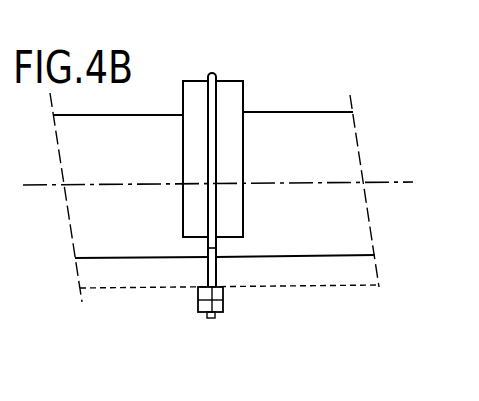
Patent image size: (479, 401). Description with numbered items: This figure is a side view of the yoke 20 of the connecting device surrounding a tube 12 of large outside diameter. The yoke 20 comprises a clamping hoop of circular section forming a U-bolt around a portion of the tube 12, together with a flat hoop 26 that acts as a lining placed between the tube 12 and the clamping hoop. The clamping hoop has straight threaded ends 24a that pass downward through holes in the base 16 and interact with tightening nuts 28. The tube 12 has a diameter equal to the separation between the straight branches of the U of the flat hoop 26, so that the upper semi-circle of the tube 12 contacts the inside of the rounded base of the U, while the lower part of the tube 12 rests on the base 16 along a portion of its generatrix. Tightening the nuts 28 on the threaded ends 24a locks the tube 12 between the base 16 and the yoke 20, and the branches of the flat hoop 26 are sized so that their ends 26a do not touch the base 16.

The tube 12 is at (282, 120).
The base 16 is at (158, 263).
The yoke 20 is at (178, 80).
The threaded ends 24a is at (217, 278).
The flat hoop 26 is at (223, 100).
The ends of the flat hoop 26a is at (227, 232).
The tightening nuts 28 is at (203, 302).